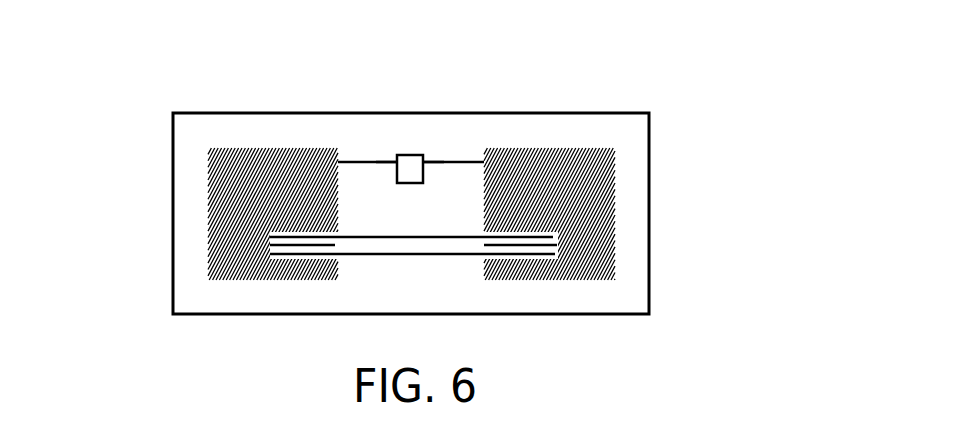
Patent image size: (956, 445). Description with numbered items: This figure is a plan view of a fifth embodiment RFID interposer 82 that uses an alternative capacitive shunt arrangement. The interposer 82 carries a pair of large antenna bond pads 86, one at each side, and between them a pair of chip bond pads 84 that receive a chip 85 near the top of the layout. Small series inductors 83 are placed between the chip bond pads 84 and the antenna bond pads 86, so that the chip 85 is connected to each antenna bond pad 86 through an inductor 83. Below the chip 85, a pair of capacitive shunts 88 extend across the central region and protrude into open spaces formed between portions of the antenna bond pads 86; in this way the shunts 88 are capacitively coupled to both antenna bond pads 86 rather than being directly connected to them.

The RFID interposer 82 is at (146, 100).
The series inductor 83 is at (362, 143).
The chip bond pad 84 is at (440, 160).
The chip 85 is at (407, 183).
The antenna bond pad 86 is at (277, 150).
The capacitive shunt 88 is at (420, 257).